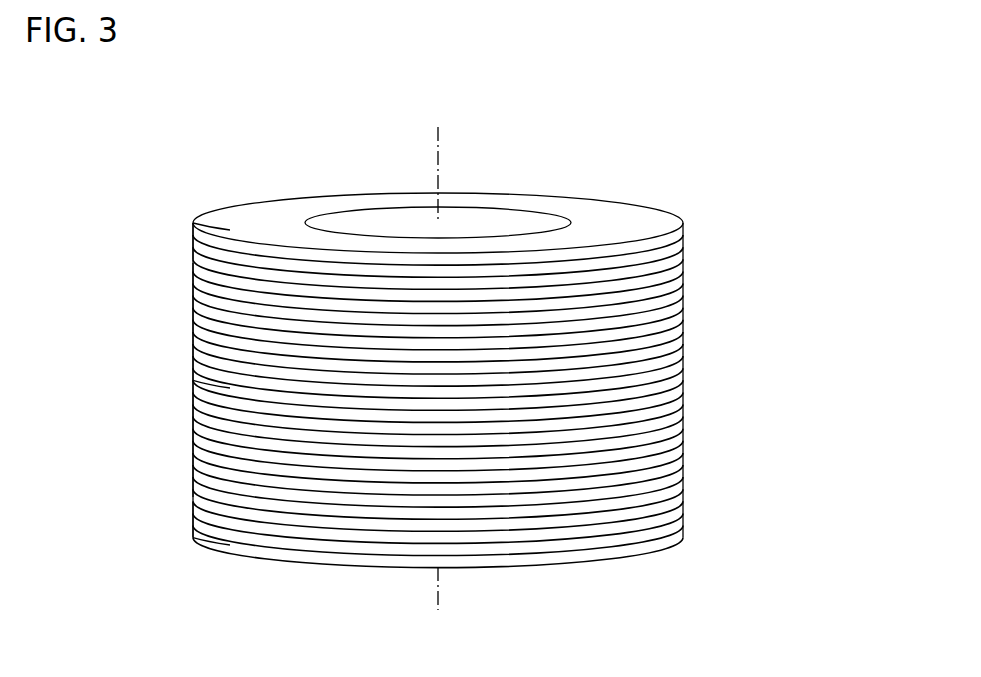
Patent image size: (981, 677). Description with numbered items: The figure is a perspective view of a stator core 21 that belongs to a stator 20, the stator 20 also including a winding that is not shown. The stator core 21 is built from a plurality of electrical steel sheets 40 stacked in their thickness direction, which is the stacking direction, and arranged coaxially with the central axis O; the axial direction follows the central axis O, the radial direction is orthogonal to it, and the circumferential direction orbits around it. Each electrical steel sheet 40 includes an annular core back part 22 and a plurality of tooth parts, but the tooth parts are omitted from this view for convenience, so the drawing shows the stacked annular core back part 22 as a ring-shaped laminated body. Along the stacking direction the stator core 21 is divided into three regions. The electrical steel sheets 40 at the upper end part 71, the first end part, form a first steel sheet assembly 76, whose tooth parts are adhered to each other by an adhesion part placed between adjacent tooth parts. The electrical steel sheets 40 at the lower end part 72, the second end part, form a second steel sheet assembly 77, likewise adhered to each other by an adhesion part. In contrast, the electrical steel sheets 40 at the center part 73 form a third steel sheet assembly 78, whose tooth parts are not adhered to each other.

The stator 20 is at (708, 160).
The stator core 21 is at (507, 309).
The core back part 22 is at (605, 212).
The electrical steel sheet 40 is at (678, 233).
The upper end part 71 is at (178, 225).
The lower end part 72 is at (178, 502).
The center part 73 is at (178, 263).
The first steel sheet assembly 76 is at (150, 215).
The second steel sheet assembly 77 is at (150, 546).
The third steel sheet assembly 78 is at (150, 416).
The central axis O is at (440, 147).